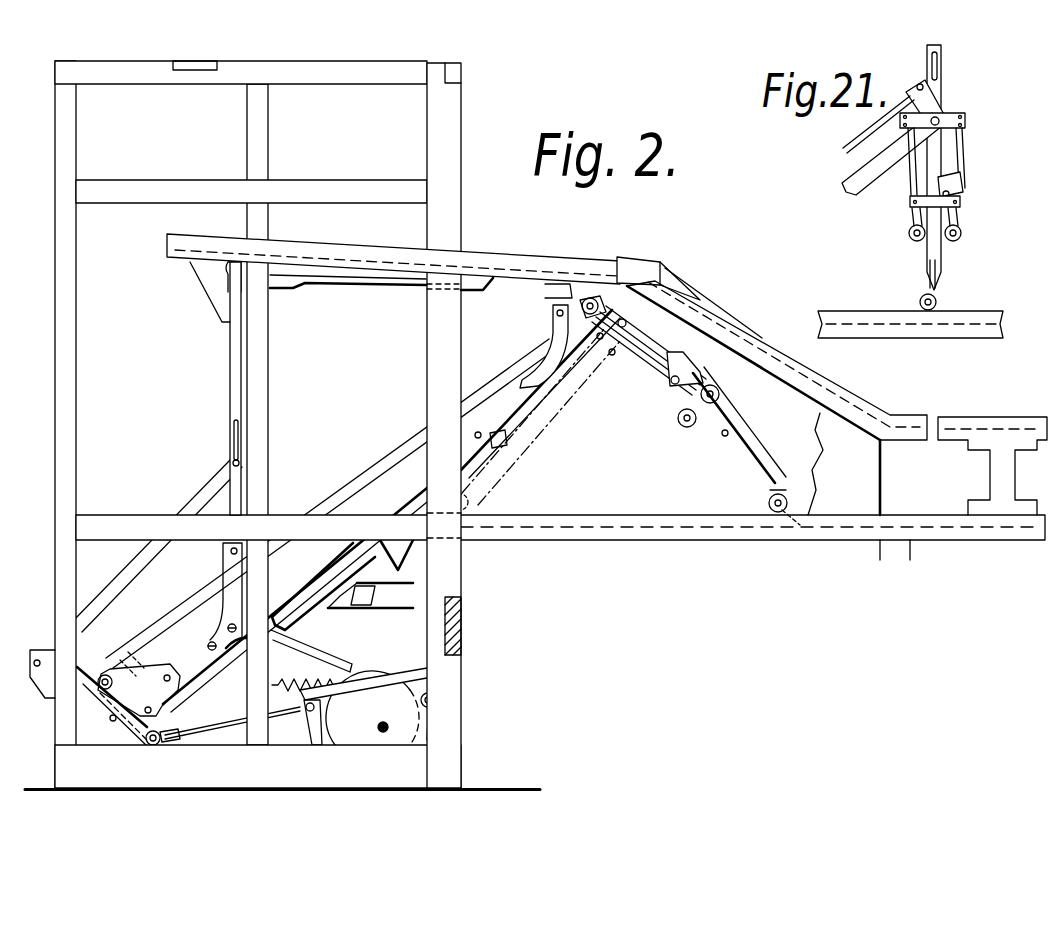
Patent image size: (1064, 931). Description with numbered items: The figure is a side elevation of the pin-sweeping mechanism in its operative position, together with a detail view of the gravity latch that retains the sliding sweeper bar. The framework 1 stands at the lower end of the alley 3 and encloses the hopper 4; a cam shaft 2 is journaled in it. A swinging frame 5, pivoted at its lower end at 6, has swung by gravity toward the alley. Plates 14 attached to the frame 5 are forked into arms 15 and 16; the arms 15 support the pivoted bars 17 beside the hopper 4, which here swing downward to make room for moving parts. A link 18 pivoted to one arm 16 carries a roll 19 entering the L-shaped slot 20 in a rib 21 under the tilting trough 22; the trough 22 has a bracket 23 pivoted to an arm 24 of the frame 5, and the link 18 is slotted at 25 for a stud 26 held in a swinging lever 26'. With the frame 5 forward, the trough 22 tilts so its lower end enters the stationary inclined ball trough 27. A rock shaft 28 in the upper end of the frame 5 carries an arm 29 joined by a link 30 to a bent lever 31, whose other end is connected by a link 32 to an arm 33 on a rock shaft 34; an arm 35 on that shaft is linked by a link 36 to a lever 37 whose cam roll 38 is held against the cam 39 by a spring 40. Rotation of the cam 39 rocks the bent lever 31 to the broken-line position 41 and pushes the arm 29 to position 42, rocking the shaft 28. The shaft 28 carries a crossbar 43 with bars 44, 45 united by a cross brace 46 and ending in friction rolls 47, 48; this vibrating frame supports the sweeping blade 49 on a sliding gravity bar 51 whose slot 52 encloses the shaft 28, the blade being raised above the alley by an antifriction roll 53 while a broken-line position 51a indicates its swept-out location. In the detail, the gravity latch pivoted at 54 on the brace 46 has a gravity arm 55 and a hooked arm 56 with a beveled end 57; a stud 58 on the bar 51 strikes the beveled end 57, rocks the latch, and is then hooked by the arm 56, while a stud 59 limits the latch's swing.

In FIG. 2, the framework 1 is at (52, 350).
In FIG. 2, the cam shaft 2 is at (432, 747).
In FIG. 2, the alley 3 is at (640, 514).
In FIG. 21, the alley 3 is at (850, 310).
In FIG. 2, the hopper 4 is at (415, 589).
In FIG. 2, the swinging frame 5 is at (527, 406).
In FIG. 21, the swinging frame 5 is at (848, 178).
In FIG. 2, the pivot 6 is at (110, 722).
In FIG. 2, the plates 14 is at (238, 641).
In FIG. 2, the arms 15 is at (322, 655).
In FIG. 2, the arms 16 is at (223, 573).
In FIG. 2, the pivoted bars 17 is at (333, 600).
In FIG. 2, the link 18 is at (228, 380).
In FIG. 2, the roll 19 is at (237, 262).
In FIG. 2, the L-shaped slot 20 is at (355, 281).
In FIG. 2, the rib 21 is at (406, 287).
In FIG. 2, the tilting trough 22 is at (492, 257).
In FIG. 2, the bracket 23 is at (546, 291).
In FIG. 2, the arm 24 is at (557, 330).
In FIG. 2, the slot 25 is at (233, 430).
In FIG. 2, the stud 26 is at (209, 461).
In FIG. 2, the swinging lever 26' is at (157, 545).
In FIG. 2, the stationary inclined ball trough 27 is at (748, 344).
In FIG. 2, the rock shaft 28 is at (614, 356).
In FIG. 21, the rock shaft 28 is at (945, 127).
In FIG. 2, the arm 29 is at (590, 298).
In FIG. 21, the arm 29 is at (942, 101).
In FIG. 2, the link 30 is at (496, 385).
In FIG. 21, the link 30 is at (842, 148).
In FIG. 2, the bent lever 31 is at (104, 676).
In FIG. 2, the link 32 is at (224, 724).
In FIG. 2, the arm 33 is at (318, 735).
In FIG. 2, the rock shaft 34 is at (300, 762).
In FIG. 2, the arm 35 is at (296, 712).
In FIG. 2, the link 36 is at (396, 668).
In FIG. 2, the lever 37 is at (440, 676).
In FIG. 2, the cam roll 38 is at (437, 700).
In FIG. 2, the cam 39 is at (424, 718).
In FIG. 2, the spring 40 is at (297, 682).
In FIG. 2, the broken-line position of bent lever 41 is at (130, 664).
In FIG. 2, the broken-line position of arm 42 is at (645, 262).
In FIG. 2, the crossbar 43 is at (690, 292).
In FIG. 21, the crossbar 43 is at (968, 123).
In FIG. 2, the bar 44 is at (720, 320).
In FIG. 21, the bar 44 is at (966, 174).
In FIG. 2, the bar 45 is at (640, 372).
In FIG. 21, the bar 45 is at (910, 178).
In FIG. 2, the cross brace 46 is at (678, 420).
In FIG. 21, the cross brace 46 is at (910, 208).
In FIG. 2, the friction roll 47 is at (720, 395).
In FIG. 21, the friction roll 47 is at (962, 237).
In FIG. 2, the friction roll 48 is at (688, 428).
In FIG. 21, the friction roll 48 is at (927, 264).
In FIG. 2, the sweeping blade 49 is at (757, 477).
In FIG. 21, the sweeping blade 49 is at (927, 280).
In FIG. 2, the sliding gravity bar 51 is at (748, 456).
In FIG. 21, the sliding gravity bar 51 is at (943, 262).
In FIG. 2, the bar position 51a is at (520, 460).
In FIG. 2, the slot 52 is at (652, 393).
In FIG. 21, the slot 52 is at (930, 66).
In FIG. 2, the antifriction roll 53 is at (784, 494).
In FIG. 21, the antifriction roll 53 is at (919, 302).
In FIG. 21, the pivot 54 is at (910, 200).
In FIG. 2, the gravity arm 55 is at (736, 346).
In FIG. 21, the gravity arm 55 is at (964, 186).
In FIG. 2, the hooked arm 56 is at (700, 380).
In FIG. 21, the hooked arm 56 is at (960, 218).
In FIG. 2, the beveled end 57 is at (790, 372).
In FIG. 21, the beveled end 57 is at (962, 223).
In FIG. 2, the stud 58 is at (730, 431).
In FIG. 21, the stud 58 is at (909, 236).
In FIG. 2, the stud 59 is at (690, 367).
In FIG. 21, the stud 59 is at (958, 205).